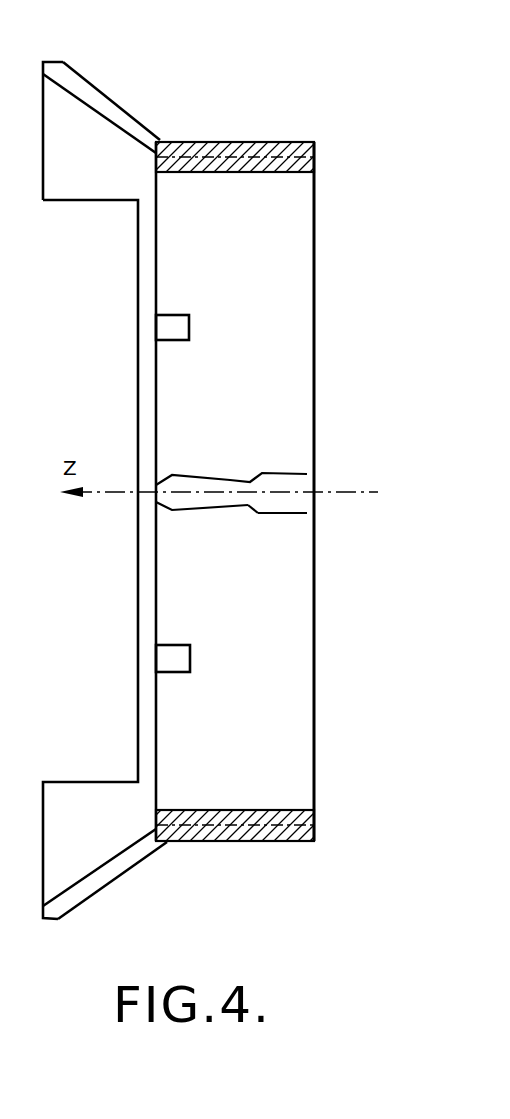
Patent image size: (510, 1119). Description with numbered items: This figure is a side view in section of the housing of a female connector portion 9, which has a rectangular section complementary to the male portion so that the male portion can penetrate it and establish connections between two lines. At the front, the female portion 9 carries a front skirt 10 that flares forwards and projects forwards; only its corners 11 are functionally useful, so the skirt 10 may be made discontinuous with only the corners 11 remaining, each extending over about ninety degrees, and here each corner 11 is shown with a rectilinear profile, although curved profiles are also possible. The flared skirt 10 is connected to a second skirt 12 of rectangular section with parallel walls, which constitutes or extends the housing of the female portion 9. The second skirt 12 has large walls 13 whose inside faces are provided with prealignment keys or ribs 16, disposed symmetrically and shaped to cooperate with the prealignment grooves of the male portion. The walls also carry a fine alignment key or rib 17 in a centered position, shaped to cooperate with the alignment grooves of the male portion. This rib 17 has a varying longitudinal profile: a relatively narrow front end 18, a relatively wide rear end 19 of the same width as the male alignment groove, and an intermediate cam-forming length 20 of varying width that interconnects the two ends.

The female connector portion 9 is at (322, 146).
The front skirt 10 is at (121, 96).
The corners of the skirt 11 is at (72, 118).
The second skirt 12 is at (248, 133).
The large walls 13 is at (308, 361).
The prealignment keys or ribs 16 is at (175, 325).
The fine alignment key or rib 17 is at (292, 481).
The narrow front end 18 is at (187, 500).
The wide rear end 19 is at (278, 502).
The intermediate cam-forming length 20 is at (253, 502).